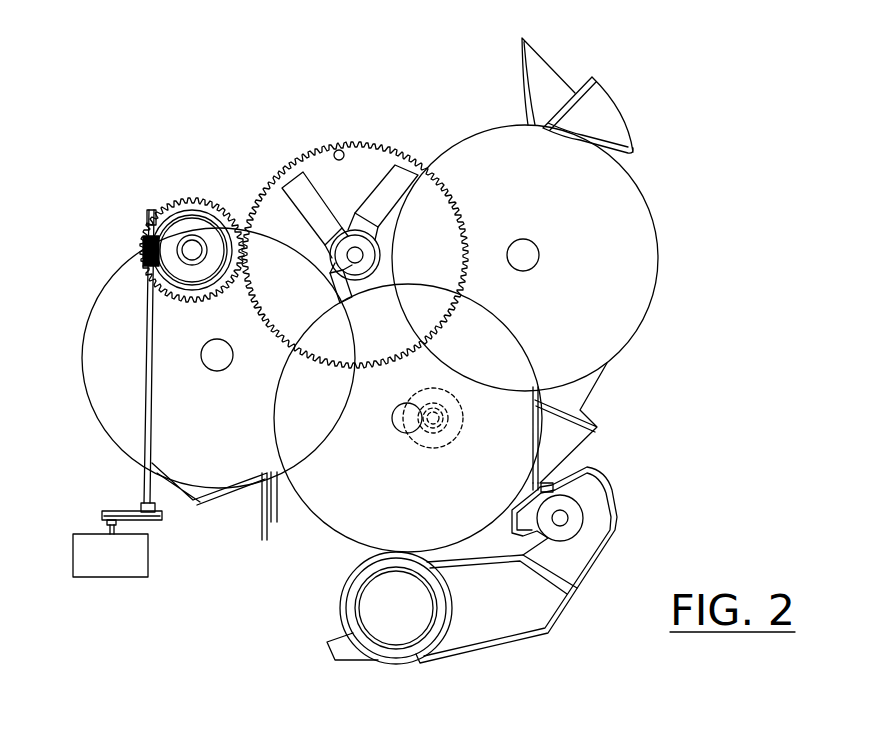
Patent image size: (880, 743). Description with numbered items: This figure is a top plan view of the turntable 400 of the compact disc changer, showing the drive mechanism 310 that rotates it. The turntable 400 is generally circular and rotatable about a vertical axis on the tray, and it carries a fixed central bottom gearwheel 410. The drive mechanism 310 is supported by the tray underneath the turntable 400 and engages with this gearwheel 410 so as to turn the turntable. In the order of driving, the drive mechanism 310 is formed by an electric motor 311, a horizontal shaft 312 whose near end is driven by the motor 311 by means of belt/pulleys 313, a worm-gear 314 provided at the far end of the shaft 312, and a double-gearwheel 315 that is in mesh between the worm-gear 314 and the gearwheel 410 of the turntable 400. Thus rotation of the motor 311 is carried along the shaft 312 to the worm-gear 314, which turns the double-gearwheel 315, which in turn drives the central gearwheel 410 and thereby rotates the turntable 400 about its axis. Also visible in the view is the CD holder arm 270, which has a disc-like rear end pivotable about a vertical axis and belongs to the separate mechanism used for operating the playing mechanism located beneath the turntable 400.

The CD holder arm 270 is at (553, 632).
The drive mechanism 310 is at (127, 401).
The electric motor 311 is at (123, 573).
The horizontal shaft 312 is at (152, 412).
The belt/pulleys 313 is at (118, 510).
The worm-gear 314 is at (142, 245).
The double-gearwheel 315 is at (208, 203).
The turntable 400 is at (641, 161).
The central bottom gearwheel 410 is at (453, 202).